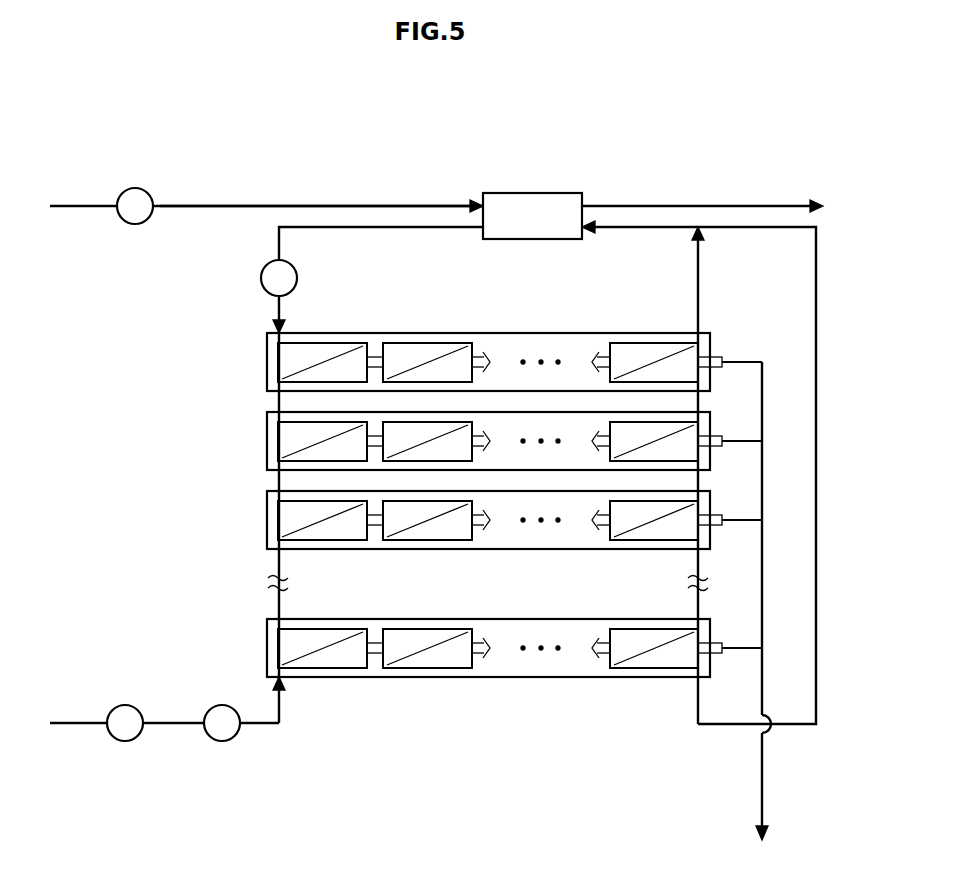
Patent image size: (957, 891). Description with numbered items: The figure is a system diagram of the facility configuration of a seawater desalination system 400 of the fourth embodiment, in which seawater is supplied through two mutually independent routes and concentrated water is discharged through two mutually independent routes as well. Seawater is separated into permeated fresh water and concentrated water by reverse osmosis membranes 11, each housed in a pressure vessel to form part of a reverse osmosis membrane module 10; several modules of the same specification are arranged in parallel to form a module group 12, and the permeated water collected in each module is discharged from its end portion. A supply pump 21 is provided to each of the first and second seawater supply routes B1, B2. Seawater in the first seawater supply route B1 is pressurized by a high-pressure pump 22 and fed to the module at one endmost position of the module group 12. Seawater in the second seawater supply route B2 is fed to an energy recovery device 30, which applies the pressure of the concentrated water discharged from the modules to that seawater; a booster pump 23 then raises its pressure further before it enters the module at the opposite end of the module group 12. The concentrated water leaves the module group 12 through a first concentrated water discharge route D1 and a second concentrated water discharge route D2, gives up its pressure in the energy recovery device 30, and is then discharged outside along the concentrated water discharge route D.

The seawater desalination system 400 is at (445, 175).
The reverse osmosis membrane module 10 is at (317, 690).
The reverse osmosis membrane 11 is at (353, 662).
The module group 12 is at (262, 333).
The supply pump 21 is at (135, 188).
The high-pressure pump 22 is at (222, 742).
The booster pump 23 is at (297, 276).
The energy recovery device 30 is at (533, 192).
The first seawater supply route B1 is at (263, 725).
The second seawater supply route B2 is at (262, 205).
The concentrated water discharge route D is at (627, 205).
The first concentrated water discharge route D1 is at (708, 726).
The second concentrated water discharge route D2 is at (698, 292).